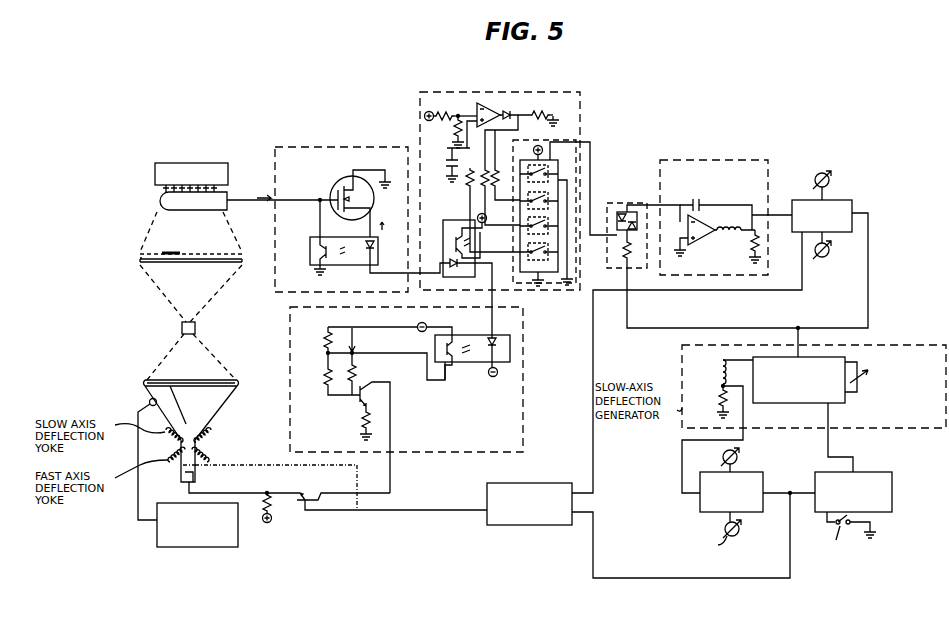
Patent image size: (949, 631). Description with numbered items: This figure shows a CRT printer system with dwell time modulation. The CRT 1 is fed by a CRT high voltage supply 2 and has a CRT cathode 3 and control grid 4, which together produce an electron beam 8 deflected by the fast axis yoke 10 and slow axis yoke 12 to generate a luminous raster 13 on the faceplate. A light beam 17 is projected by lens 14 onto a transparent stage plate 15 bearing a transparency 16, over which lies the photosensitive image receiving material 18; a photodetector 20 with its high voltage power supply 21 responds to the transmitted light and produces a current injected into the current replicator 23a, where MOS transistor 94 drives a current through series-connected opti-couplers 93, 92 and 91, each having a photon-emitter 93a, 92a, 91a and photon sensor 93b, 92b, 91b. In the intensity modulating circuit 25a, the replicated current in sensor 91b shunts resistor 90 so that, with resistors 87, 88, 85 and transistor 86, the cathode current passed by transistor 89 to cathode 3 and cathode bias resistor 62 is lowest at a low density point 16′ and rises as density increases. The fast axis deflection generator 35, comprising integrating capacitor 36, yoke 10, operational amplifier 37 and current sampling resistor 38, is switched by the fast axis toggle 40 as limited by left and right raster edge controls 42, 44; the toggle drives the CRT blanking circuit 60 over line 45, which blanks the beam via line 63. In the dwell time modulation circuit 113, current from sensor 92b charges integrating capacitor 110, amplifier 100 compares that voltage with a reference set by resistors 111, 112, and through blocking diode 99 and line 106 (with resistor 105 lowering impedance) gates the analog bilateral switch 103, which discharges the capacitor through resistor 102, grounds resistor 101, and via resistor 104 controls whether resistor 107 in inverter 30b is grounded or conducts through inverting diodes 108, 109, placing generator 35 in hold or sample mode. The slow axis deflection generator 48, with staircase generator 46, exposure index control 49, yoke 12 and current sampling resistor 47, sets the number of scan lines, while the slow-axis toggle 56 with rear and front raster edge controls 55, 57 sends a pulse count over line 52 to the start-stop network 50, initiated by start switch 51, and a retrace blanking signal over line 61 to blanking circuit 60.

The CRT 1 is at (238, 383).
The CRT high voltage supply 2 is at (211, 549).
The CRT cathode 3 is at (186, 488).
The CRT control grid 4 is at (205, 470).
The electron beam 8 is at (188, 402).
The fast axis deflection yoke 10 is at (205, 433).
The slow axis deflection yoke 12 is at (206, 458).
The luminous raster 13 is at (176, 381).
The lens 14 is at (196, 328).
The transparent stage plate 15 is at (127, 277).
The transparency 16 is at (242, 264).
The low density point 16′ is at (187, 257).
The light beam 17 is at (166, 293).
The photosensitive image receiving material 18 is at (243, 256).
The photodetector 20 is at (155, 197).
The high voltage power supply 21 is at (232, 166).
The current replicator 23a is at (315, 146).
The intensity modulating circuit 25a is at (523, 358).
The inverter 30b is at (609, 203).
The fast axis deflection generator 35 is at (769, 176).
The integrating capacitor 36 is at (700, 198).
The operational amplifier 37 is at (700, 222).
The yoke current sampling resistor 38 is at (754, 252).
The fast axis toggle 40 is at (852, 208).
The left raster edge control 42 is at (828, 175).
The right raster edge control 44 is at (830, 252).
The output line 45 is at (594, 463).
The staircase generator 46 is at (798, 404).
The current sampling resistor 47 is at (719, 400).
The slow axis deflection generator 48 is at (896, 345).
The exposure index control 49 is at (862, 386).
The start-stop network 50 is at (892, 480).
The start switch 51 is at (865, 522).
The line 52 is at (832, 421).
The rear raster edge control 55 is at (723, 456).
The slow-axis toggle 56 is at (762, 512).
The front raster edge control 57 is at (736, 540).
The CRT blanking circuit 60 is at (535, 526).
The line 61 is at (593, 545).
The cathode bias resistor 62 is at (272, 518).
The line 63 is at (459, 515).
The resistor 85 is at (356, 376).
The transistor 86 is at (378, 384).
The resistor 87 is at (326, 380).
The resistor 88 is at (362, 418).
The transistor 89 is at (300, 496).
The resistor 90 is at (326, 338).
The opti-coupler 91 is at (491, 378).
The photon-emitter 91a is at (493, 336).
The photon sensor 91b is at (450, 366).
The opti-coupler 92 is at (444, 248).
The photon-emitter 92a is at (470, 268).
The photon sensor 92b is at (466, 240).
The opti-coupler 93 is at (378, 246).
The photon-emitting diode 93a is at (368, 252).
The photon-sensor 93b is at (312, 250).
The p-channel enhancement mode MOS transistor 94 is at (338, 182).
The blocking diode 99 is at (511, 112).
The amplifier 100 is at (484, 104).
The resistor 101 is at (483, 192).
The resistor 102 is at (470, 186).
The analog bilateral switch 103 is at (580, 165).
The resistor 104 is at (496, 165).
The resistor 105 is at (554, 107).
The line 106 is at (560, 131).
The resistor 107 is at (628, 270).
The inverting diode 108 is at (622, 250).
The inverting diode 109 is at (648, 206).
The integrating capacitor 110 is at (446, 156).
The resistor 111 is at (438, 106).
The resistor 112 is at (447, 132).
The dwell time modulation circuit 113 is at (452, 92).